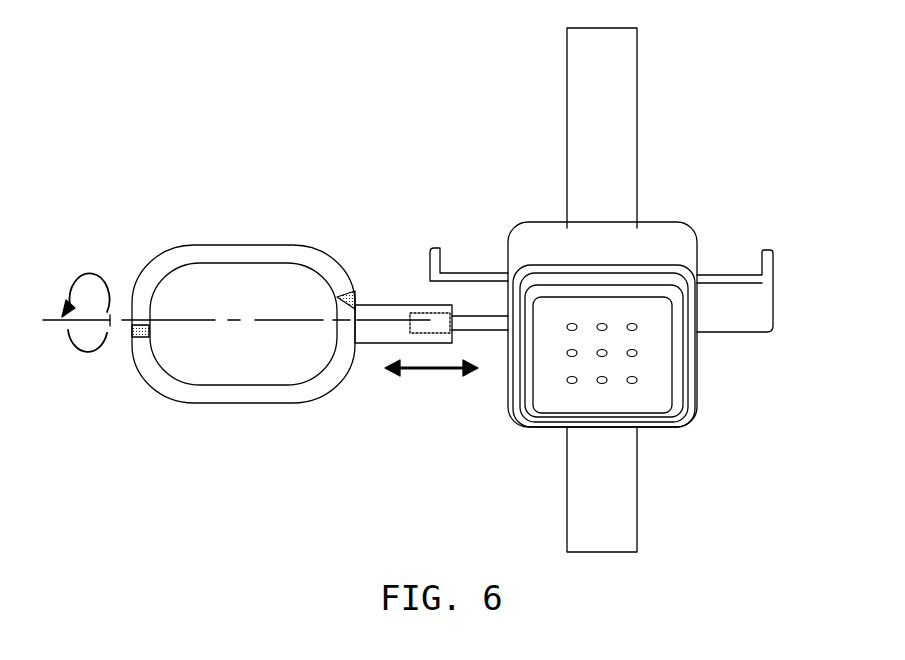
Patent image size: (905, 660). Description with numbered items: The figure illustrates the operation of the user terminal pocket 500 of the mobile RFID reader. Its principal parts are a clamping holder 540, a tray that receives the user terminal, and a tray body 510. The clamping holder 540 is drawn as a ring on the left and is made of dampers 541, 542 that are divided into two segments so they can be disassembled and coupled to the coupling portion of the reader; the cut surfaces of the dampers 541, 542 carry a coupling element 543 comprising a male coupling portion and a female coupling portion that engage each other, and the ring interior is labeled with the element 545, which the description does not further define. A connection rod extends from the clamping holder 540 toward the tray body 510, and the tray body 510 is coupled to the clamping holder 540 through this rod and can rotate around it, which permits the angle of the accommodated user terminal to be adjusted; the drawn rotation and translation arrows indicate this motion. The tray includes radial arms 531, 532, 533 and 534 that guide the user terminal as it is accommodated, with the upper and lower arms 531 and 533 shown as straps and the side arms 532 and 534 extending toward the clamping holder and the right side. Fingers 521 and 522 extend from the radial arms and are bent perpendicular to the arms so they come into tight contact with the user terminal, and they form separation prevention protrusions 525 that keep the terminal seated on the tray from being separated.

The user terminal pocket 500 is at (628, 290).
The tray body 510 is at (686, 243).
The finger 521 is at (575, 231).
The finger 522 is at (776, 262).
The separation prevention protrusion 525 is at (440, 250).
The radial arm 531 is at (610, 153).
The radial arm 532 is at (473, 293).
The radial arm 533 is at (615, 508).
The radial arm 534 is at (727, 325).
The clamping holder 540 is at (245, 305).
The damper 541 is at (172, 258).
The damper 542 is at (223, 400).
The coupling element 543 is at (133, 335).
The ring body 545 is at (283, 348).